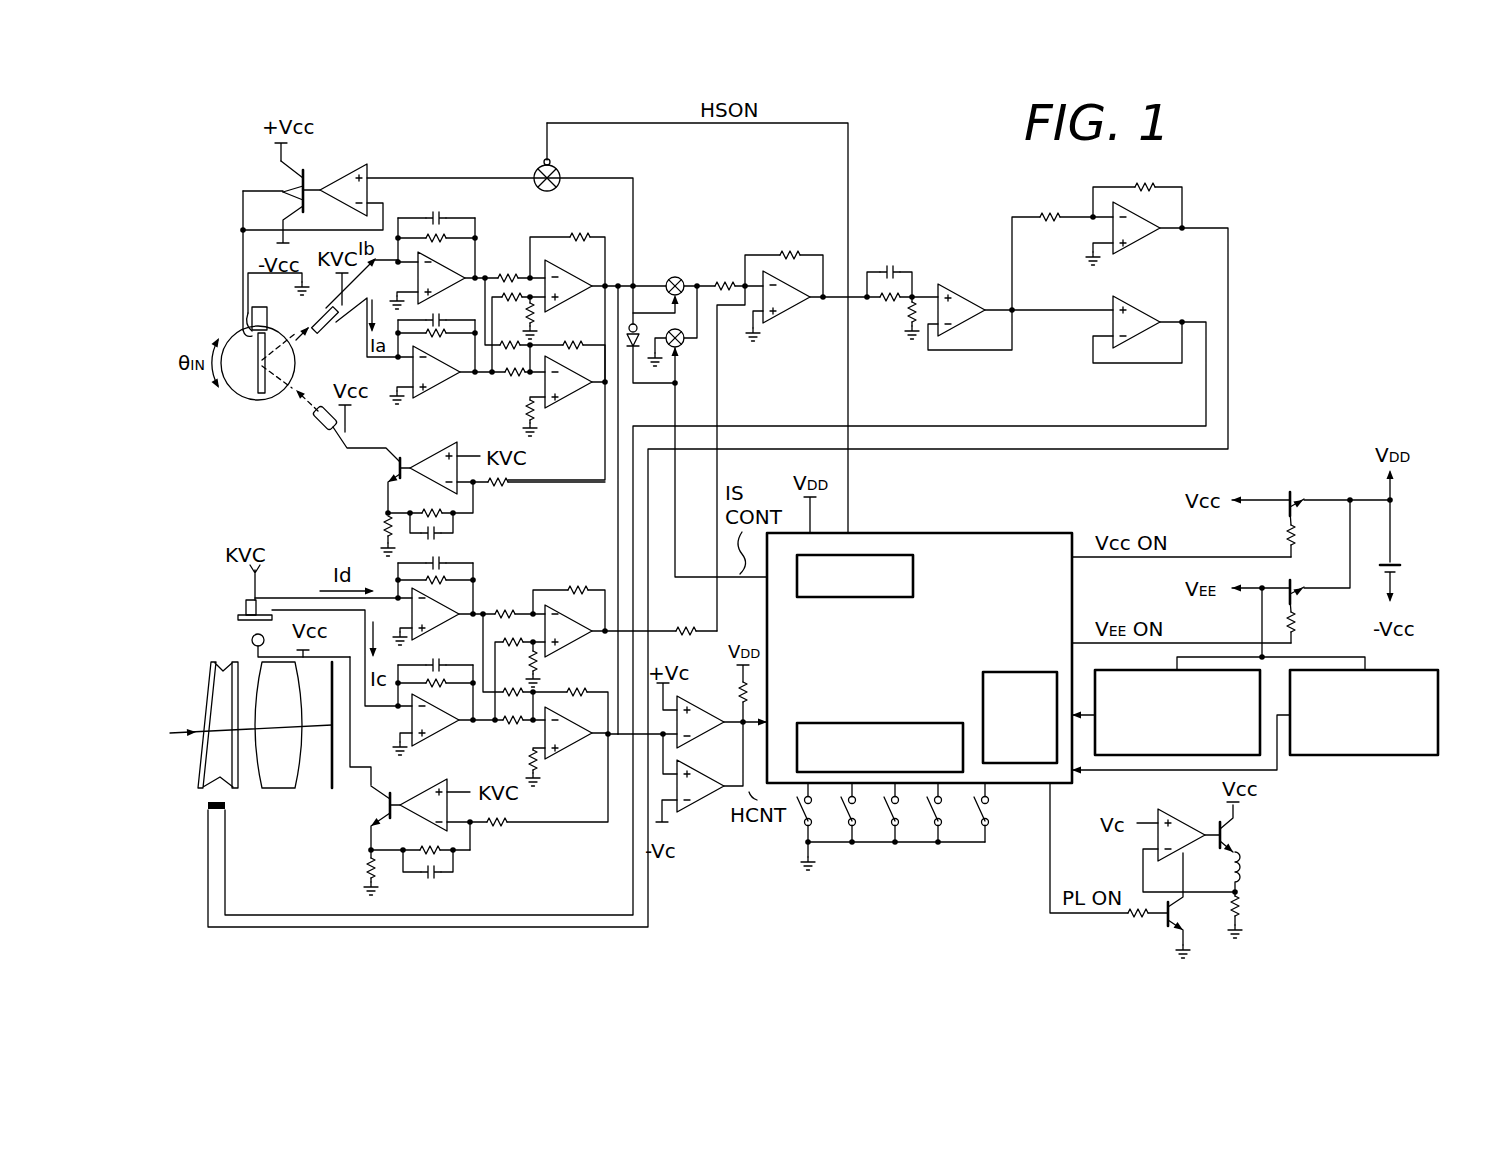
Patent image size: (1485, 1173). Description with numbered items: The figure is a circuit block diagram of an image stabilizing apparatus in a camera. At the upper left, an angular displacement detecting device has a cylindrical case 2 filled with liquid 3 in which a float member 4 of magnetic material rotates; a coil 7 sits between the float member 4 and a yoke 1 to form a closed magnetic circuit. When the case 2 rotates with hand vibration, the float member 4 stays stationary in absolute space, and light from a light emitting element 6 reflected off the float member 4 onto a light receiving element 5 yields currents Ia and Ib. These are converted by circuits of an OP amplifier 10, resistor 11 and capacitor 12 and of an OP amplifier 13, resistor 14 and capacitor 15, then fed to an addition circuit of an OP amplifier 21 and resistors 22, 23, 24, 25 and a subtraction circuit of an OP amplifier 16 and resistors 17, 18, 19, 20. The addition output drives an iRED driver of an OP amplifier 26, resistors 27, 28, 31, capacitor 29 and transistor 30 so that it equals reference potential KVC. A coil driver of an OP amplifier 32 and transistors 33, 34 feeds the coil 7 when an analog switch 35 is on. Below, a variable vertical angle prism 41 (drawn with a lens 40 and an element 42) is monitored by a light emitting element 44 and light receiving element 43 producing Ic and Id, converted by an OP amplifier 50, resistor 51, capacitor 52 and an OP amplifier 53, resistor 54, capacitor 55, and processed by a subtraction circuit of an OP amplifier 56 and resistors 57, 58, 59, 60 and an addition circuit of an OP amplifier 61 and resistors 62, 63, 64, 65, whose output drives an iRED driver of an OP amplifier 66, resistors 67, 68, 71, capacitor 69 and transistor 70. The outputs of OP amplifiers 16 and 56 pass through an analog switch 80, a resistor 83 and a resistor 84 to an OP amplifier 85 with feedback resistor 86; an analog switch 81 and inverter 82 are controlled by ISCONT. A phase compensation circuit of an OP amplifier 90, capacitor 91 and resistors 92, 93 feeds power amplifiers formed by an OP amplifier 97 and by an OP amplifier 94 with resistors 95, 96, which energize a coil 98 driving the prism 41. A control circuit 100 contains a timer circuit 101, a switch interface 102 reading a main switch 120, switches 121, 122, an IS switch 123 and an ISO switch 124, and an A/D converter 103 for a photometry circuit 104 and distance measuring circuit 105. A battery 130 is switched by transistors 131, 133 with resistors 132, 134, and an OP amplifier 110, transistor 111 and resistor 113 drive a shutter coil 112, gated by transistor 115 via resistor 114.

The yoke 1 is at (270, 313).
The cylindrical case 2 is at (234, 394).
The liquid 3 is at (276, 394).
The float member 4 is at (260, 396).
The light receiving element 5 is at (332, 336).
The light emitting element 6 is at (320, 430).
The coil 7 is at (244, 326).
The OP amplifier 10 is at (428, 382).
The resistor 11 is at (442, 336).
The capacitor 12 is at (438, 318).
The OP amplifier 13 is at (416, 276).
The resistor 14 is at (440, 236).
The capacitor 15 is at (436, 216).
The OP amplifier 16 is at (562, 270).
The resistor 17 is at (506, 276).
The resistor 18 is at (582, 236).
The resistor 19 is at (508, 286).
The resistor 20 is at (538, 314).
The OP amplifier 21 is at (562, 402).
The resistor 22 is at (524, 414).
The resistor 23 is at (514, 374).
The resistor 24 is at (518, 328).
The resistor 25 is at (586, 348).
The OP amplifier 26 is at (426, 456).
The resistor 27 is at (504, 484).
The resistor 28 is at (454, 512).
The capacitor 29 is at (442, 536).
The transistor 30 is at (394, 468).
The resistor 31 is at (380, 530).
The OP amplifier 32 is at (354, 170).
The transistor 33 is at (288, 172).
The transistor 34 is at (280, 211).
The analog switch 35 is at (538, 166).
The lens 40 is at (282, 788).
The variable vertical angle prism 41 is at (230, 780).
The film plane 42 is at (331, 776).
The light receiving element 43 is at (238, 616).
The light emitting element 44 is at (250, 643).
The OP amplifier 50 is at (438, 728).
The resistor 51 is at (442, 684).
The capacitor 52 is at (440, 666).
The OP amplifier 53 is at (440, 624).
The resistor 54 is at (398, 568).
The capacitor 55 is at (461, 572).
The OP amplifier 56 is at (570, 616).
The resistor 57 is at (505, 614).
The resistor 58 is at (584, 588).
The resistor 59 is at (514, 640).
The resistor 60 is at (540, 658).
The OP amplifier 61 is at (570, 748).
The resistor 62 is at (536, 772).
The resistor 63 is at (512, 724).
The resistor 64 is at (510, 692).
The resistor 65 is at (575, 696).
The OP amplifier 66 is at (426, 796).
The resistor 67 is at (504, 828).
The resistor 68 is at (448, 858).
The capacitor 69 is at (437, 880).
The transistor 70 is at (381, 801).
The resistor 71 is at (366, 865).
The analog switch 80 is at (680, 276).
The analog switch 81 is at (686, 350).
The inverter 82 is at (641, 322).
The resistor 83 is at (724, 284).
The resistor 84 is at (696, 628).
The OP amplifier 85 is at (782, 318).
The feedback resistor 86 is at (790, 254).
The OP amplifier 90 is at (968, 290).
The capacitor 91 is at (890, 270).
The resistor 92 is at (886, 302).
The resistor 93 is at (910, 320).
The OP amplifier 94 is at (1136, 238).
The resistor 95 is at (1050, 220).
The resistor 96 is at (1148, 187).
The OP amplifier 97 is at (1130, 328).
The coil 98 is at (204, 808).
The control circuit 100 is at (1026, 533).
The timer circuit 101 is at (913, 580).
The switch interface 102 is at (801, 723).
The A/D converter 103 is at (1038, 672).
The photometry circuit 104 is at (1265, 757).
The distance measuring circuit 105 is at (1398, 758).
The OP amplifier 110 is at (1182, 821).
The transistor 111 is at (1230, 816).
The coil 112 is at (1242, 864).
The resistor 113 is at (1242, 906).
The resistor 114 is at (1134, 919).
The transistor 115 is at (1180, 908).
The main switch 120 is at (800, 835).
The switch SW1 121 is at (848, 832).
The switch SW2 122 is at (882, 840).
The IS switch 123 is at (928, 830).
The ISO switch 124 is at (988, 818).
The power supply battery 130 is at (1406, 566).
The transistor 131 is at (1288, 496).
The resistor 132 is at (1294, 522).
The transistor 133 is at (1293, 590).
The resistor 134 is at (1296, 624).